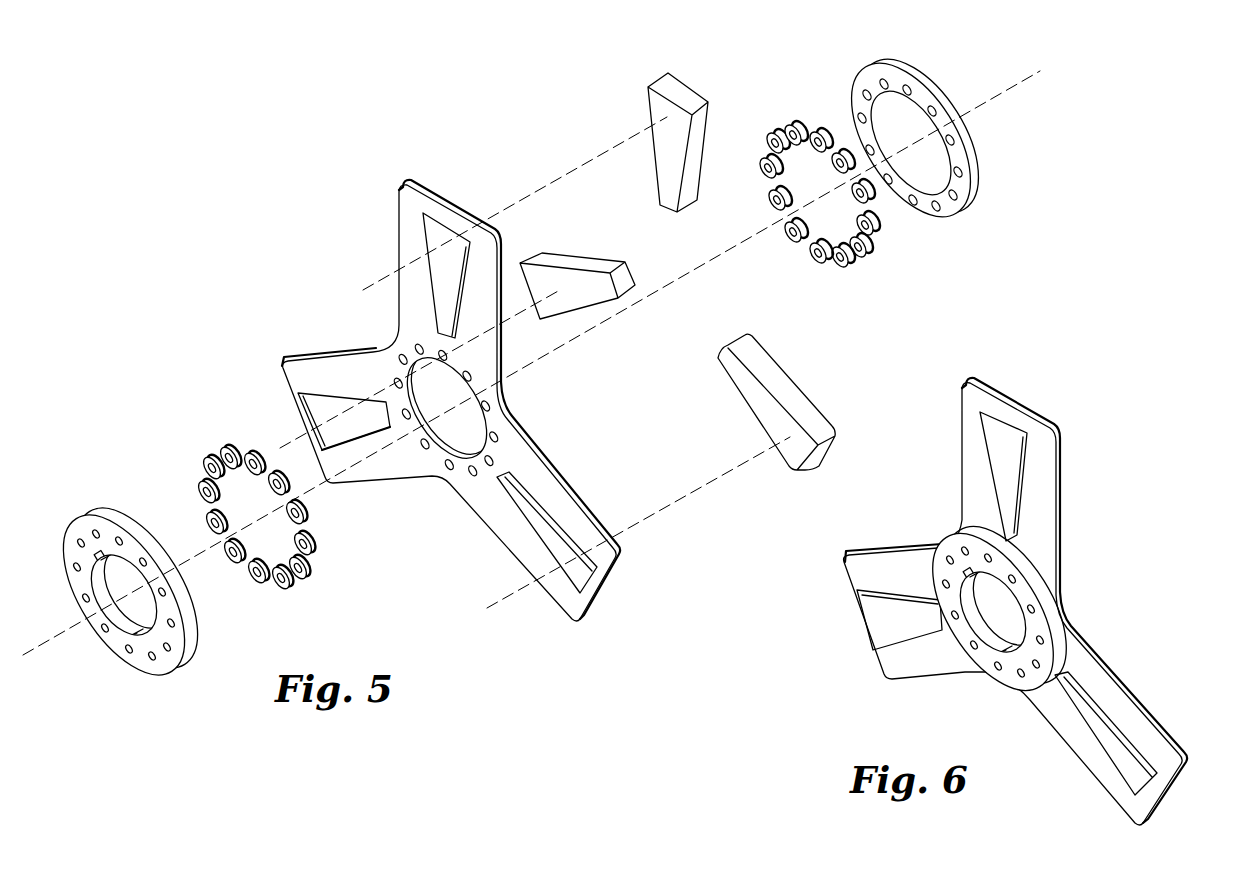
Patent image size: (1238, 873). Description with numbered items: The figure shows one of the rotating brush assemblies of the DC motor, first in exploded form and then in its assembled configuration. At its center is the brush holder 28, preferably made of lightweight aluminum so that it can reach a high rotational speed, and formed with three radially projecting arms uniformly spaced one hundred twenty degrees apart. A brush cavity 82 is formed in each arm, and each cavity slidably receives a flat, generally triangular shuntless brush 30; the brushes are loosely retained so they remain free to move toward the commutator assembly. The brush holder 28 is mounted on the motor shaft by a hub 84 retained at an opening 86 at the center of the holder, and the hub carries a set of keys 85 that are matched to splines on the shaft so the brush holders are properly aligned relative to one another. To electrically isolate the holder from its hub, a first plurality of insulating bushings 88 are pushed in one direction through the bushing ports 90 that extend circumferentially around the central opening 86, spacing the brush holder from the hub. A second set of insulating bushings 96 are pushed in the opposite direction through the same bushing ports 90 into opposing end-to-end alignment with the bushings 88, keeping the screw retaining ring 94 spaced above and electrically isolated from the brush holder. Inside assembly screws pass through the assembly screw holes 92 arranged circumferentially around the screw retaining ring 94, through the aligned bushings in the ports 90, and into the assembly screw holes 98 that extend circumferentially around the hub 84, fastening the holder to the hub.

In FIG. 5, the brush holder 28 is at (547, 455).
In FIG. 6, the brush holder 28 is at (1095, 648).
In FIG. 5, the brush 30 is at (652, 96).
In FIG. 6, the brush 30 is at (1020, 460).
In FIG. 5, the brush cavity 82 is at (428, 238).
In FIG. 5, the hub 84 is at (182, 640).
In FIG. 6, the hub 84 is at (1037, 588).
In FIG. 5, the keys 85 is at (96, 563).
In FIG. 6, the keys 85 is at (1020, 608).
In FIG. 5, the opening 86 is at (470, 412).
In FIG. 5, the insulating bushings 88 is at (228, 453).
In FIG. 5, the bushing ports 90 is at (403, 356).
In FIG. 5, the assembly screw holes 92 is at (908, 87).
In FIG. 5, the screw retaining ring 94 is at (940, 95).
In FIG. 5, the insulating bushings 96 is at (796, 130).
In FIG. 5, the assembly screw holes 98 is at (98, 533).
In FIG. 6, the assembly screw holes 98 is at (964, 553).